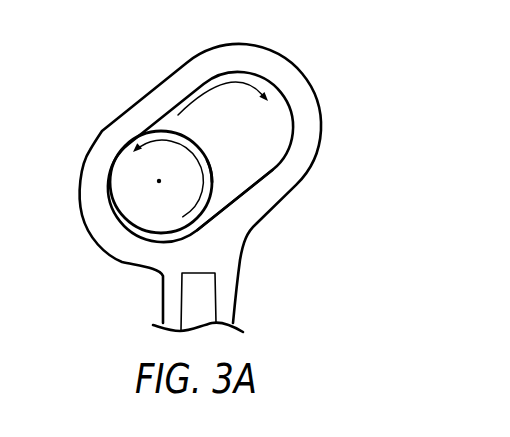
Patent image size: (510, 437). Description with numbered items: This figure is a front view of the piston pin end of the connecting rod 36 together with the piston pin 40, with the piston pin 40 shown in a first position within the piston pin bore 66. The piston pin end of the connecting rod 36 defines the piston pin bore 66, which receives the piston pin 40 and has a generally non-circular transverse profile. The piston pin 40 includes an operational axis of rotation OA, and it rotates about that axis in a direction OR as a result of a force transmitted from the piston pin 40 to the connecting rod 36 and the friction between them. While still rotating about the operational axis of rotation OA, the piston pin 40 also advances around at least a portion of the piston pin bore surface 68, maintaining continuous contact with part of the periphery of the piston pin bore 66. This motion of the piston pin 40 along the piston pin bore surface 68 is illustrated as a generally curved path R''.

The connecting rod 36 is at (371, 98).
The piston pin 40 is at (128, 173).
The piston pin bore 66 is at (277, 133).
The piston pin bore surface 68 is at (259, 182).
The operational axis of rotation OA is at (159, 181).
The direction of rotation OR is at (210, 184).
The curved path R'' is at (223, 60).